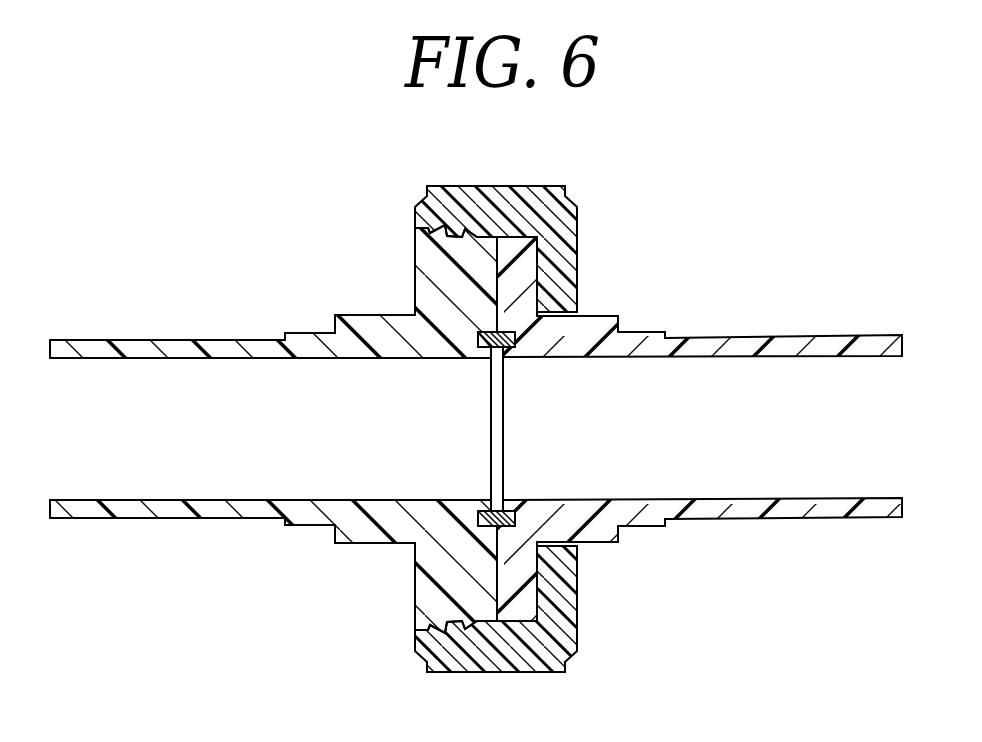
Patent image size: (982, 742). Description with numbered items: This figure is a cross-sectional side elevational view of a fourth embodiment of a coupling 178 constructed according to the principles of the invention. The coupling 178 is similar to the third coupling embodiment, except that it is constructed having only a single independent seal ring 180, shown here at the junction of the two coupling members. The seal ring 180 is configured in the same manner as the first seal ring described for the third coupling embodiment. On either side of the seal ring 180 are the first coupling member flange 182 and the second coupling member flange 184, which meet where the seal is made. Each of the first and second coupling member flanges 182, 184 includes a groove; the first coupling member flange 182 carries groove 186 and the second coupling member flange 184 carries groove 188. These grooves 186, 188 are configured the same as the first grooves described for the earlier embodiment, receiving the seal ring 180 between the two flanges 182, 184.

The coupling 178 is at (352, 212).
The seal ring 180 is at (533, 378).
The first coupling member flange 182 is at (520, 338).
The second coupling member flange 184 is at (447, 343).
The groove 186 is at (462, 328).
The groove 188 is at (483, 523).